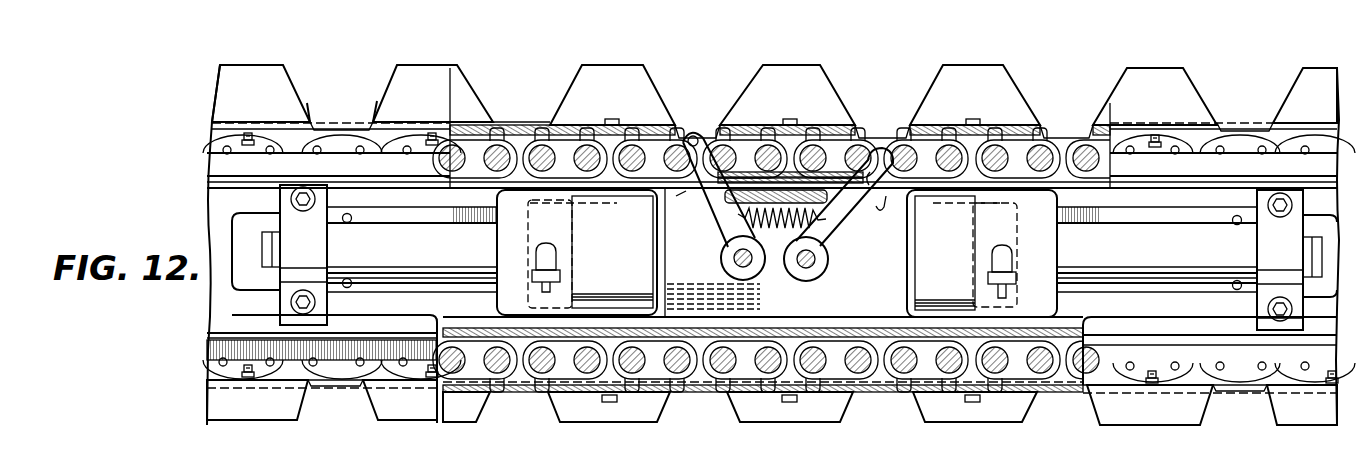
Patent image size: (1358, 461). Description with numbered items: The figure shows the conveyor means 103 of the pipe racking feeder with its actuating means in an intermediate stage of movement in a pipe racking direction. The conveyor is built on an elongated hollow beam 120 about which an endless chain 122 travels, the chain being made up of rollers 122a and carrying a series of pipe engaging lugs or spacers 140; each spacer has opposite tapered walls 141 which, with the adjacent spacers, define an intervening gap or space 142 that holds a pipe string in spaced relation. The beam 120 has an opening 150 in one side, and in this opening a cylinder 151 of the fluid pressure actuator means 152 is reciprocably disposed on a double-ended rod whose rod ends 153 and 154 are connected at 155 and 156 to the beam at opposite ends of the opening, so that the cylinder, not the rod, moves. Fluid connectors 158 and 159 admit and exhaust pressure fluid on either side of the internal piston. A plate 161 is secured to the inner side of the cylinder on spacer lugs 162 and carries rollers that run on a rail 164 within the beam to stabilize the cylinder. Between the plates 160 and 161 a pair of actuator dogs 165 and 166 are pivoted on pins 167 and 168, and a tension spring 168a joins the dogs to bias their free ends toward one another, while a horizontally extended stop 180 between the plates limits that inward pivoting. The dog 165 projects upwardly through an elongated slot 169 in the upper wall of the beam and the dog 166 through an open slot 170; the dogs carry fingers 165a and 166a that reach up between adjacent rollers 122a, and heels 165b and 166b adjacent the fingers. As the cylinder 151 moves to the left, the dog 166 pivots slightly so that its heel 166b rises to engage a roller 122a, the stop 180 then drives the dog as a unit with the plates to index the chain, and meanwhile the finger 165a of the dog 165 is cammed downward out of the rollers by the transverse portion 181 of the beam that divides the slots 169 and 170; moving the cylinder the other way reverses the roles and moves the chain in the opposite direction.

The conveyor means 103 is at (1033, 72).
The elongated hollow beam 120 is at (218, 192).
The endless chain 122 is at (737, 375).
The chain rollers 122a is at (677, 142).
The pipe engaging lugs or spacers 140 is at (428, 80).
The tapered walls 141 is at (377, 101).
The gap or space 142 is at (538, 80).
The opening 150 is at (346, 184).
The cylinder 151 is at (500, 207).
The fluid pressure actuator means 152 is at (591, 252).
The rod end 153 is at (1157, 249).
The rod end 154 is at (412, 245).
The connection of rod end to beam 155 is at (1273, 242).
The connection of rod end to beam 156 is at (292, 228).
The fluid connector 158 is at (993, 291).
The fluid connector 159 is at (548, 288).
The plate 160 is at (907, 314).
The plate 161 is at (723, 302).
The spacer lugs 162 is at (566, 204).
The rail 164 is at (410, 284).
The actuator dog 165 is at (843, 214).
The finger 165a is at (882, 170).
The heel 165b is at (843, 228).
The actuator dog 166 is at (727, 226).
The finger 166a is at (697, 145).
The heel 166b is at (690, 207).
The pin 167 is at (812, 264).
The pin 168 is at (736, 259).
The tension spring 168a is at (784, 232).
The elongated slot 169 is at (1003, 187).
The open slot 170 is at (565, 180).
The stop 180 is at (739, 192).
The transverse portion 181 is at (810, 175).